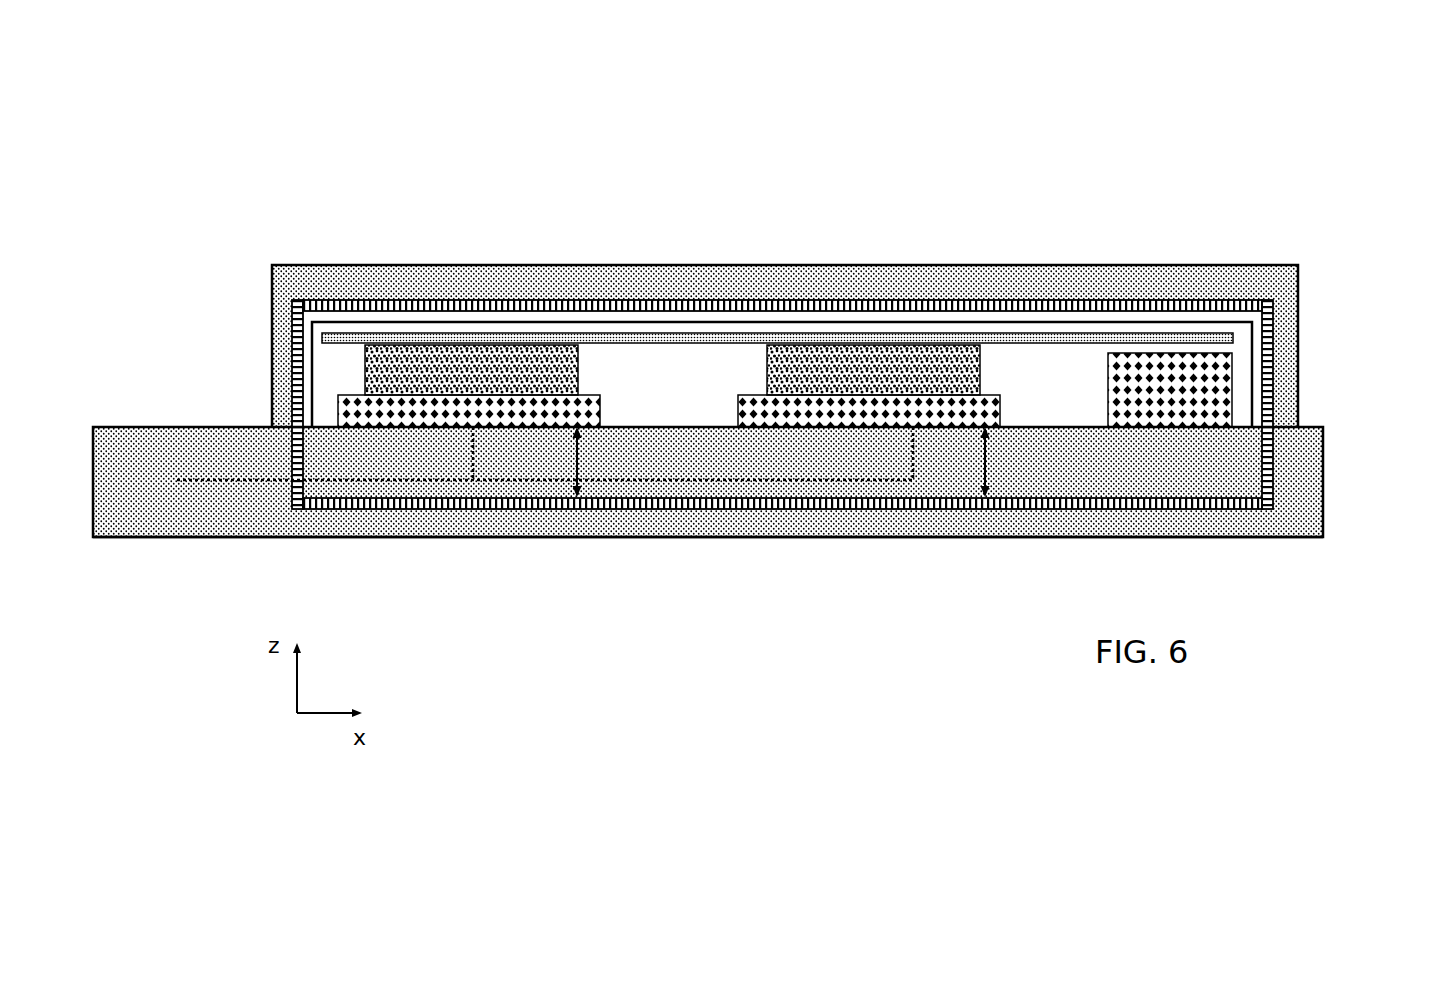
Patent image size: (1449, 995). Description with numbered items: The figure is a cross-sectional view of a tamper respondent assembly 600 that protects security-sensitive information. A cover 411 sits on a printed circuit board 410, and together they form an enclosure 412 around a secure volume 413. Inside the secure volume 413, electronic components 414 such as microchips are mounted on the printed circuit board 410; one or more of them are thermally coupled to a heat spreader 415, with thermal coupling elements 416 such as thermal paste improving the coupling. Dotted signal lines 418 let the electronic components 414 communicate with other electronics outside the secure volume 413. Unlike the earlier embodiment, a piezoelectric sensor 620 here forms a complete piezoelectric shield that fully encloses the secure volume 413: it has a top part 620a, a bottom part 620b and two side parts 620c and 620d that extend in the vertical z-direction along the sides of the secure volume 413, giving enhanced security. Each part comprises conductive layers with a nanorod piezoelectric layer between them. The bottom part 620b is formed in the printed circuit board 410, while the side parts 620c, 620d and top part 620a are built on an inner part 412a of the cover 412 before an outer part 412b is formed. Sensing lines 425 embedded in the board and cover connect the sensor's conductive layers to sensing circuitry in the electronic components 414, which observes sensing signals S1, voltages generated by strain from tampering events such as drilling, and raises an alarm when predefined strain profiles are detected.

The tamper respondent assembly 600 is at (1013, 668).
The printed circuit board 410 is at (769, 388).
The cover 411 is at (477, 527).
The enclosure 412 is at (1296, 265).
The inner part of the cover 412a is at (333, 318).
The outer part of the cover 412b is at (915, 283).
The secure volume 413 is at (692, 409).
The electronic components 414 is at (437, 427).
The heat spreader 415 is at (527, 337).
The thermal coupling elements 416 is at (766, 367).
The signal lines 418 is at (262, 482).
The sensing lines 425 is at (540, 458).
The piezoelectric sensor 620 is at (783, 391).
The top part of the piezoelectric sensor 620a is at (750, 308).
The bottom part of the piezoelectric sensor 620b is at (752, 505).
The side part of the piezoelectric sensor 620c is at (291, 348).
The side part of the piezoelectric sensor 620d is at (1268, 375).
The sensing signals S1 is at (731, 462).